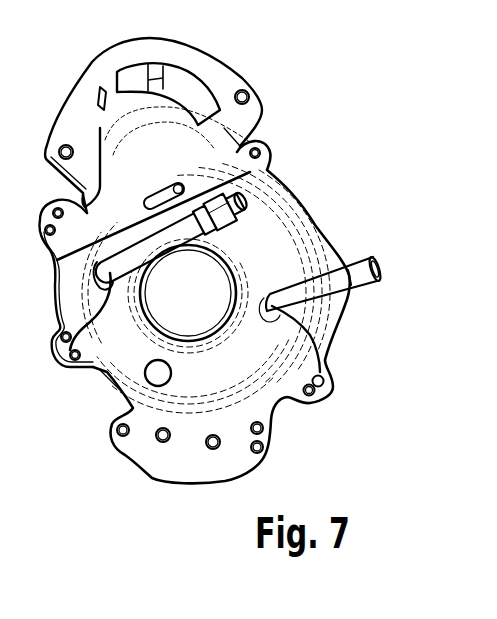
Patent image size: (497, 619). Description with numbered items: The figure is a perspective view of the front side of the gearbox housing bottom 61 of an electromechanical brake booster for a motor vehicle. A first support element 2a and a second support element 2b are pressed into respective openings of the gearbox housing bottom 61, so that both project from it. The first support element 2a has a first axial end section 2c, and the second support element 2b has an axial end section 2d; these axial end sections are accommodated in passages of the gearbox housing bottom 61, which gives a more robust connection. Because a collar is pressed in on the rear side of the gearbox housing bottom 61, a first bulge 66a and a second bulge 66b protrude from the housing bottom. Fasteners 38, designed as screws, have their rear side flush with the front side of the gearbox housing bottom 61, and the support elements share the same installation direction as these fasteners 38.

The first support element 2a is at (57, 260).
The second support element 2b is at (362, 268).
The first axial end section 2c is at (67, 360).
The axial end section 2d is at (277, 305).
The fasteners 38 is at (268, 172).
The gearbox housing bottom 61 is at (300, 213).
The first bulge 66a is at (103, 285).
The second bulge 66b is at (320, 396).